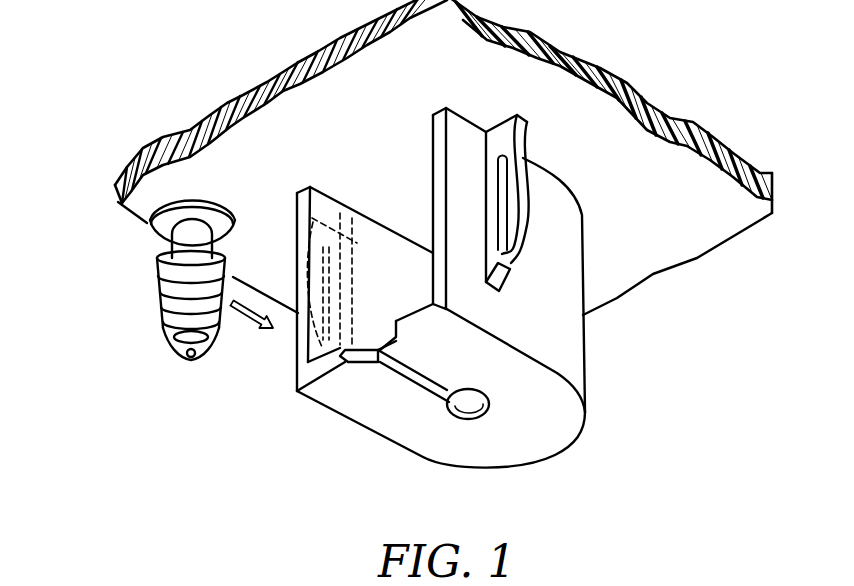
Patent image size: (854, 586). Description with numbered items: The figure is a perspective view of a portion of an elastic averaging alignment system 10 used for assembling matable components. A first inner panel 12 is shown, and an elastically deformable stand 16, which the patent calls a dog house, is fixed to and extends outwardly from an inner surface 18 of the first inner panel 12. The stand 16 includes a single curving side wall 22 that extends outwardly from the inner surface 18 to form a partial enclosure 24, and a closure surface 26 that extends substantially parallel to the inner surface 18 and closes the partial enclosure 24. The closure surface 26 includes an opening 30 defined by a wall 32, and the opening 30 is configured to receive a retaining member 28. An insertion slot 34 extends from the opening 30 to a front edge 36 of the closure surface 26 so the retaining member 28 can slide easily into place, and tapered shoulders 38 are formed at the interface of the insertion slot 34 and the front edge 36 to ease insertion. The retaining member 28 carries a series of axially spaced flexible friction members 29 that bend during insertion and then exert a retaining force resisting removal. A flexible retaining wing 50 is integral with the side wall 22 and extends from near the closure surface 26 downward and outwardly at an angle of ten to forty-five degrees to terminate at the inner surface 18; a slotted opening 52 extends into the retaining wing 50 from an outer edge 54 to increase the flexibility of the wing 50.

The elastic averaging alignment system 10 is at (440, 322).
The first inner panel 12 is at (443, 106).
The elastically deformable stand 16 is at (482, 411).
The inner surface 18 is at (445, 265).
The side wall 22 is at (537, 246).
The partial enclosure 24 is at (348, 258).
The closure surface 26 is at (597, 412).
The retaining member 28 is at (133, 280).
The flexible friction members 29 is at (165, 344).
The opening 30 is at (481, 462).
The wall 32 is at (527, 473).
The insertion slot 34 is at (399, 423).
The front edge 36 is at (274, 384).
The tapered shoulders 38 is at (378, 312).
The flexible retaining wing 50 is at (577, 263).
The slotted opening 52 is at (568, 208).
The outer edge 54 is at (574, 299).